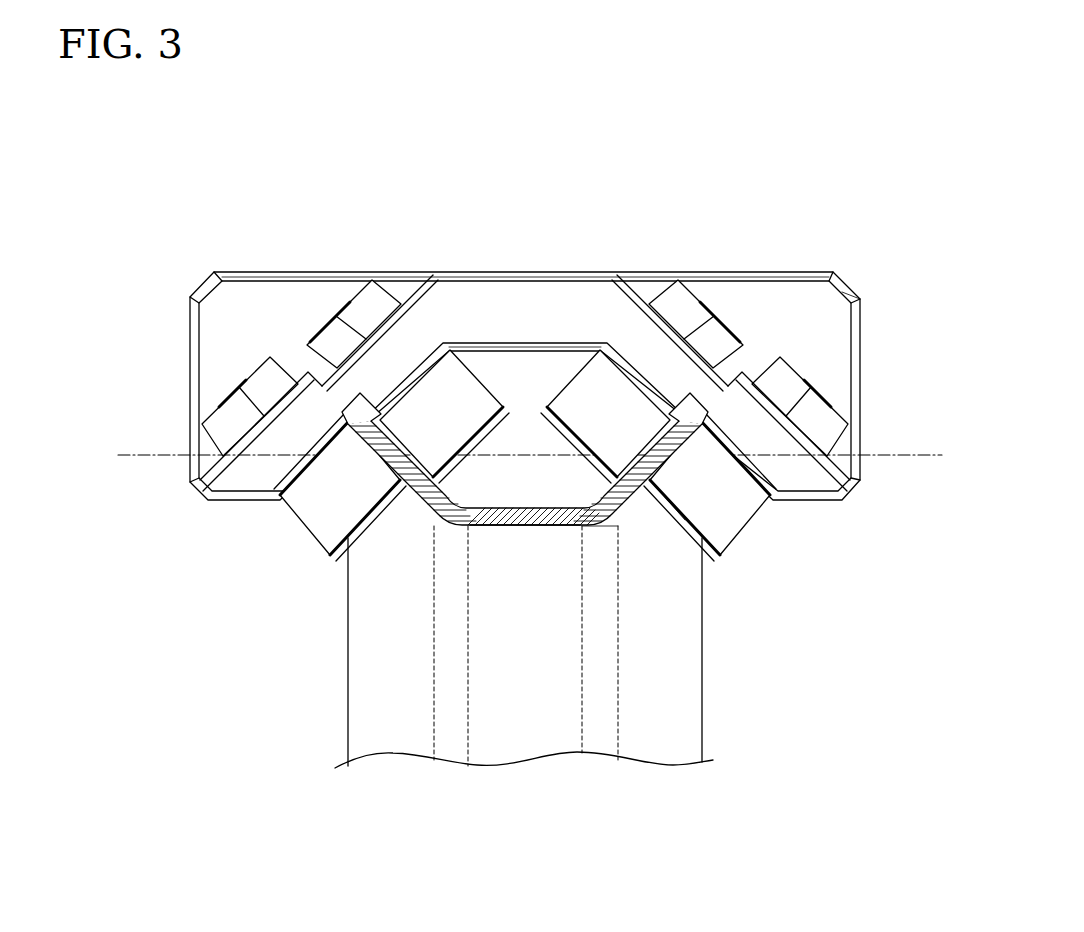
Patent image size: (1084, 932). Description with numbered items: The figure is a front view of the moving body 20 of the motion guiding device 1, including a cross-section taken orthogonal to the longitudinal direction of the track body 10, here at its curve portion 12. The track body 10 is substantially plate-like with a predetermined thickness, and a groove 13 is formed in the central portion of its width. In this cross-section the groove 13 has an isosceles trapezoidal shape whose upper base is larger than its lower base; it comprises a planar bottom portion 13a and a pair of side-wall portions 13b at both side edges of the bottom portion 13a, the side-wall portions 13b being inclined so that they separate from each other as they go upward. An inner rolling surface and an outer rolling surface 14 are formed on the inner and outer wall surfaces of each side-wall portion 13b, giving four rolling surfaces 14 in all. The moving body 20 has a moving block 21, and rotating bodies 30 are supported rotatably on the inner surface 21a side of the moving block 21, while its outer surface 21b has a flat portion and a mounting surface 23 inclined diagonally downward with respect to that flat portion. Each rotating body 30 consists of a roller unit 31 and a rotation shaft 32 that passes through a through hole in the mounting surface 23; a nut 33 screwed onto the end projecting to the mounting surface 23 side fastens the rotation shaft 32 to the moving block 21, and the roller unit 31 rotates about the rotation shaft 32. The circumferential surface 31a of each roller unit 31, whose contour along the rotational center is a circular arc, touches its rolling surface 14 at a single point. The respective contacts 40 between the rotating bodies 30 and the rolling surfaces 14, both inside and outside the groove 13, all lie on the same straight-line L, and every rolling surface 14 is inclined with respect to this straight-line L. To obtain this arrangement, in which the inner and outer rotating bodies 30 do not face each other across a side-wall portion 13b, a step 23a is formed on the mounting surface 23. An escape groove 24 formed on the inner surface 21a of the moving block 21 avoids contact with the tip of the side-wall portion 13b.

The motion guiding device 1 is at (185, 193).
The track body 10 is at (504, 528).
The curve portion 12 is at (708, 722).
The groove 13 is at (546, 523).
The bottom portion 13a is at (568, 526).
The side-wall portions 13b is at (406, 510).
The rolling surface 14 is at (400, 393).
The moving body 20 is at (227, 262).
The moving block 21 is at (188, 322).
The inner surface 21a is at (525, 375).
The outer surface 21b is at (283, 272).
The mounting surface 23 is at (737, 370).
The step 23a is at (852, 292).
The escape groove 24 is at (708, 352).
The rotating body 30 is at (483, 356).
The roller unit 31 is at (613, 533).
The circumferential surface 31a is at (678, 540).
The rotation shaft 32 is at (735, 338).
The nut 33 is at (695, 345).
The contact 40 is at (296, 455).
The straight-line L is at (128, 405).